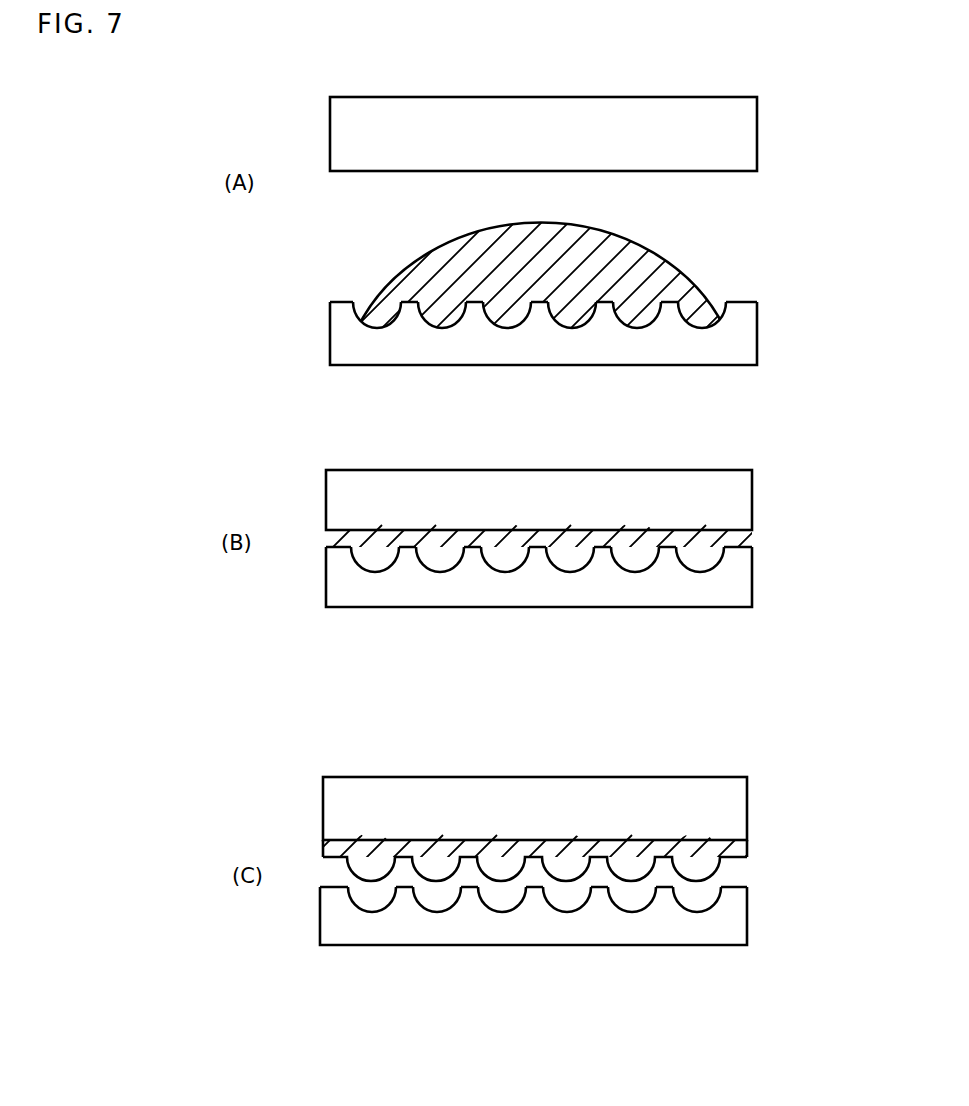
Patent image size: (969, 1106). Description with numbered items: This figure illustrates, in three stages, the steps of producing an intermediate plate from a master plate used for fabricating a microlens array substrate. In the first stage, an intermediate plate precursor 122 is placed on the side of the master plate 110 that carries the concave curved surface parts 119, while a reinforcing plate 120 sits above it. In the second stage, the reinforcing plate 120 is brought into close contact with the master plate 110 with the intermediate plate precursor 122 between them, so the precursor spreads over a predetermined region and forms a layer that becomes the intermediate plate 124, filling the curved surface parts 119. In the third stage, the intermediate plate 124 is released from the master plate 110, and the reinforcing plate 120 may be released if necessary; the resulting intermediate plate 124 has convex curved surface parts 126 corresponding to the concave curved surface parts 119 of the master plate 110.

The master plate 110 is at (748, 340).
The curved surface parts 119 is at (708, 302).
The reinforcing plate 120 is at (750, 139).
The intermediate plate precursor 122 is at (637, 238).
The intermediate plate 124 is at (735, 545).
The convex curved surface parts 126 is at (700, 562).